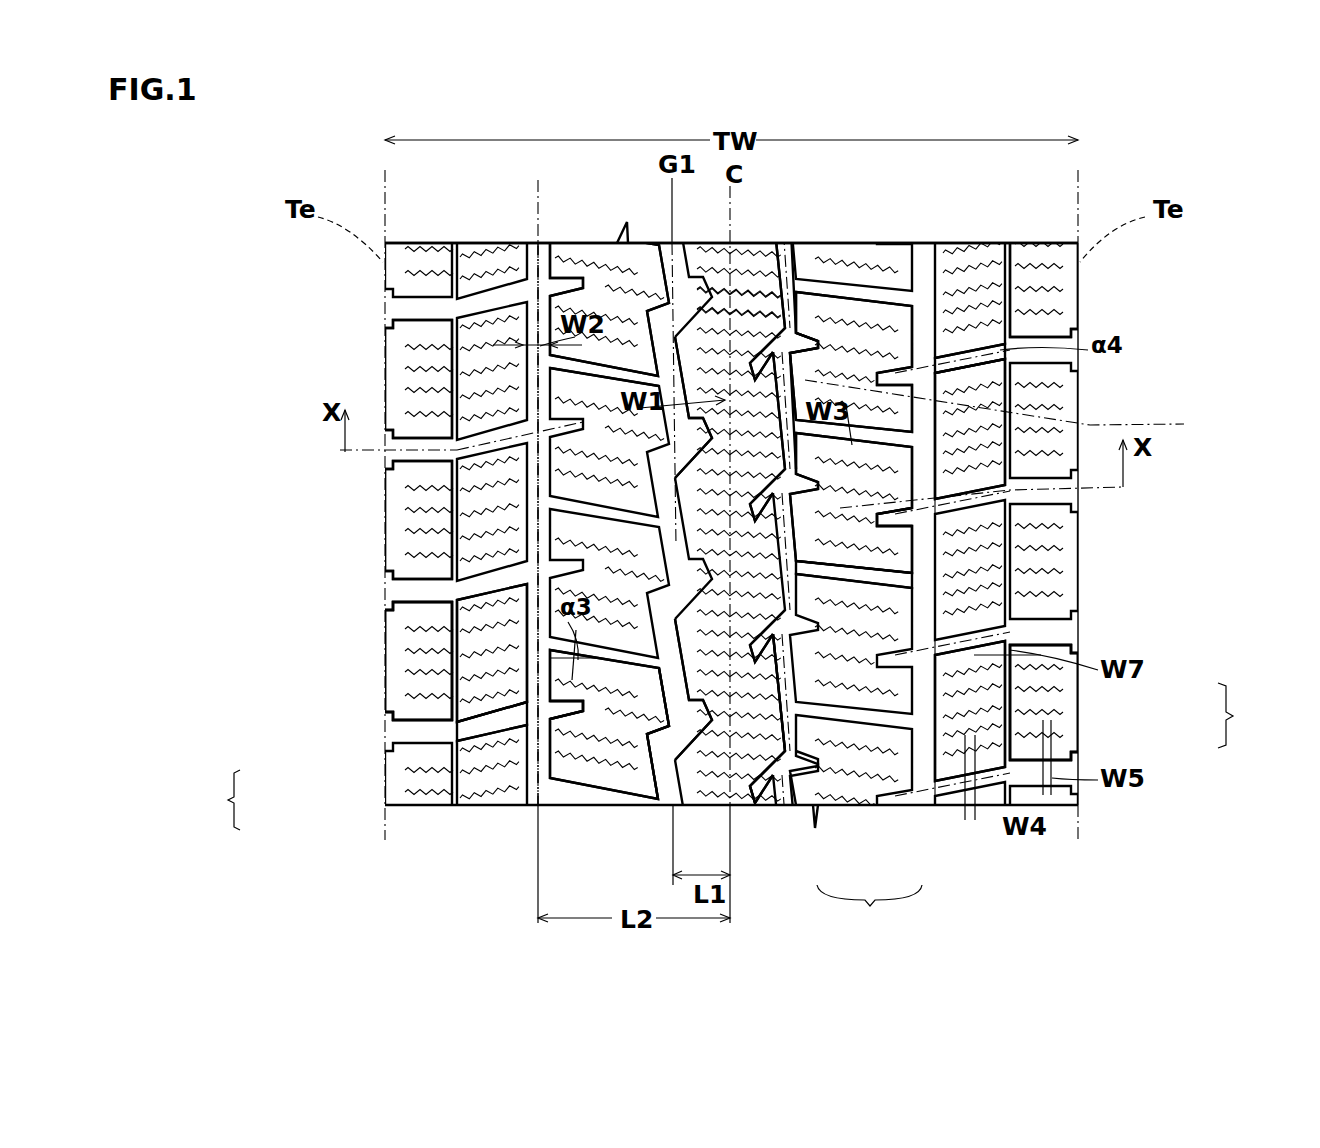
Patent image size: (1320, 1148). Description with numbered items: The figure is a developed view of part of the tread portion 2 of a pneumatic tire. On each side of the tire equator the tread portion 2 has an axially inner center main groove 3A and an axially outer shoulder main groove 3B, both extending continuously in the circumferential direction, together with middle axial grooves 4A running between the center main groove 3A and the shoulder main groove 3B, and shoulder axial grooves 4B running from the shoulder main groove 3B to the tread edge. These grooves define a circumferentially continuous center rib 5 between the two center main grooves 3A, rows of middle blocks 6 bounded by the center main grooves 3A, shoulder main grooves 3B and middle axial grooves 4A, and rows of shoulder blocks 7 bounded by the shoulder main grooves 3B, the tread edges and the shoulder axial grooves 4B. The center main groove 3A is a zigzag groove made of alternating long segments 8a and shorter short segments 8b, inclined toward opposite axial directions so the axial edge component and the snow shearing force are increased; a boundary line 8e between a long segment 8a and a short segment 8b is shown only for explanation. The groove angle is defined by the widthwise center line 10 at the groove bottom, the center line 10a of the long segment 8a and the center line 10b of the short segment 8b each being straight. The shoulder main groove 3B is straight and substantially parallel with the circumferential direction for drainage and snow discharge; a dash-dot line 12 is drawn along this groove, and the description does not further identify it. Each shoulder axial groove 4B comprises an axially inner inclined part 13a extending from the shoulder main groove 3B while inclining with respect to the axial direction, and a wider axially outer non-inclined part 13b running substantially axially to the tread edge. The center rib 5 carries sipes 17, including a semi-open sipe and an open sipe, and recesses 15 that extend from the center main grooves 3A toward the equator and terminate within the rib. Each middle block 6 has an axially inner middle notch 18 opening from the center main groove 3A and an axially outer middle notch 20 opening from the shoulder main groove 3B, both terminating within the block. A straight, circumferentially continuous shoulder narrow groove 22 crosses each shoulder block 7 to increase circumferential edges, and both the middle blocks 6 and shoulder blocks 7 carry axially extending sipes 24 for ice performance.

The tread portion 2 is at (1105, 190).
The center main groove 3A is at (670, 268).
The shoulder main groove 3B is at (532, 268).
The middle axial groove 4A is at (849, 285).
The shoulder axial groove 4B is at (733, 711).
The center rib 5 is at (707, 270).
The middle block 6 is at (594, 282).
The shoulder block 7 is at (435, 335).
The long segment 8a is at (880, 600).
The short segment 8b is at (818, 630).
The boundary line 8e is at (615, 377).
The widthwise center line 10 is at (841, 842).
The widthwise center line of the long segment 10a is at (855, 770).
The widthwise center line of the short segment 10b is at (797, 780).
The outer main groove center line 12 is at (544, 477).
The axially inner inclined part 13a is at (482, 730).
The axially outer non-inclined part 13b is at (408, 733).
The recess 15 is at (690, 760).
The sipe 17 is at (760, 272).
The axially inner middle notch 18 is at (648, 740).
The axially outer middle notch 20 is at (562, 718).
The shoulder narrow groove 22 is at (480, 730).
The sipe 24 is at (590, 483).